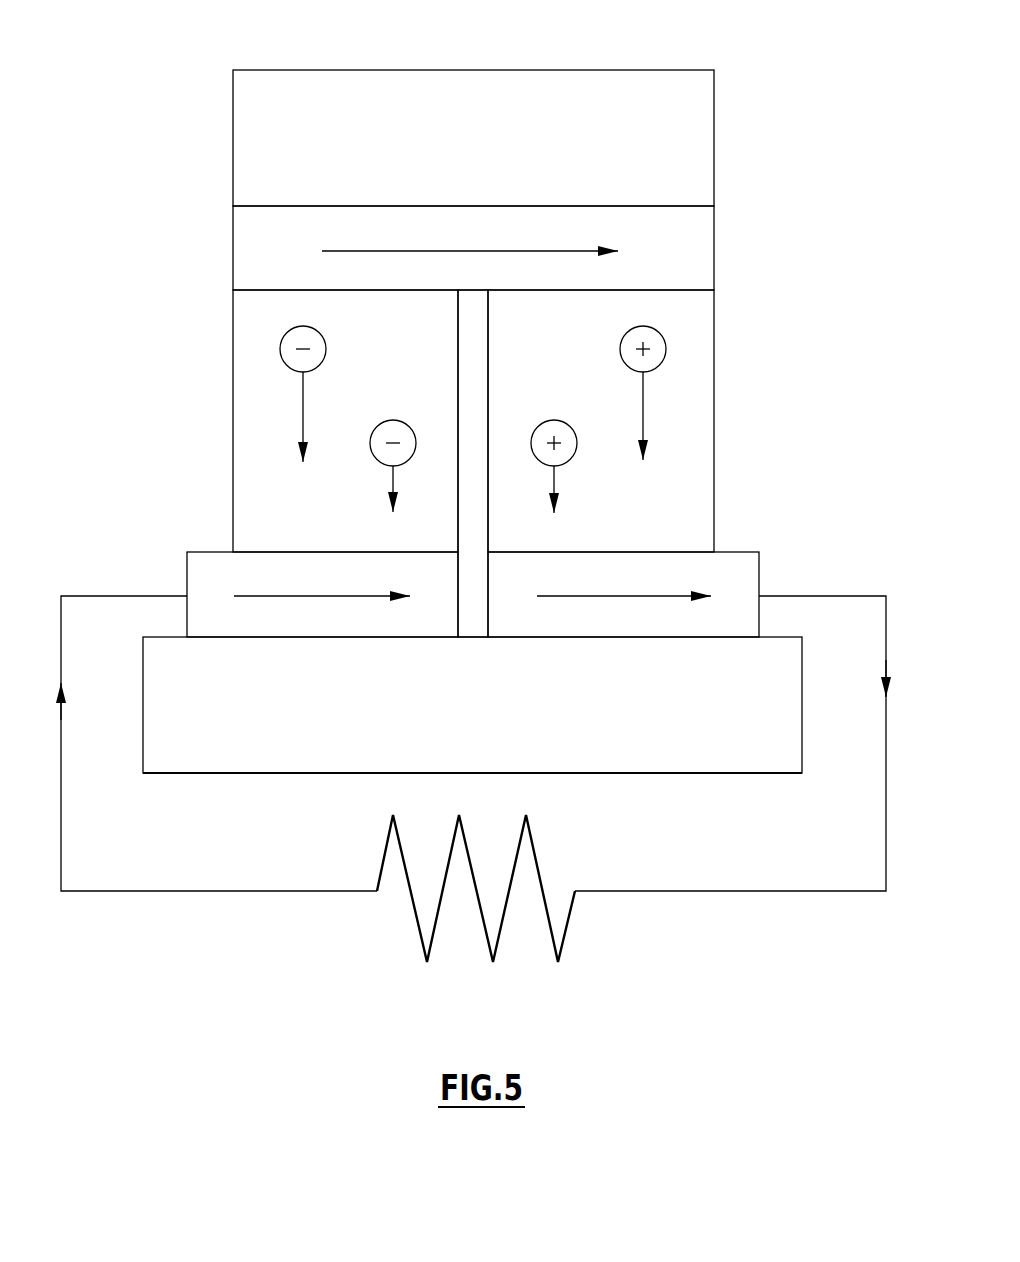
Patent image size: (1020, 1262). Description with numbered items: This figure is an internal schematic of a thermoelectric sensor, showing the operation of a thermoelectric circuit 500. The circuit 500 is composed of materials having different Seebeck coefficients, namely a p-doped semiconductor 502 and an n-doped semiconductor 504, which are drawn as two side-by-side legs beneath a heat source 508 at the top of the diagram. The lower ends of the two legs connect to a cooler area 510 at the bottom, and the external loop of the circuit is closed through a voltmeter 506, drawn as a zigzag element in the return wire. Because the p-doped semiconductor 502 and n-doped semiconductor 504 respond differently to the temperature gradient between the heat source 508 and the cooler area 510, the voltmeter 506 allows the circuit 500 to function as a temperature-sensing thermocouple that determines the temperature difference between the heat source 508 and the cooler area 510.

The thermoelectric circuit 500 is at (773, 217).
The p-doped semiconductor 502 is at (690, 408).
The n-doped semiconductor 504 is at (274, 408).
The voltmeter 506 is at (568, 925).
The heat source 508 is at (326, 108).
The cooler area 510 is at (718, 745).